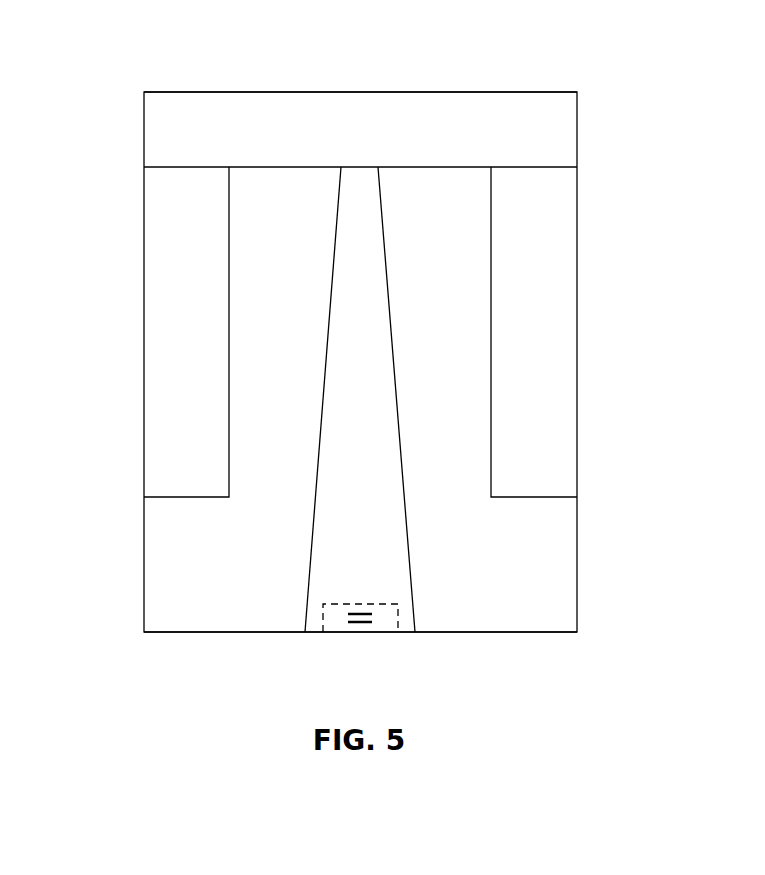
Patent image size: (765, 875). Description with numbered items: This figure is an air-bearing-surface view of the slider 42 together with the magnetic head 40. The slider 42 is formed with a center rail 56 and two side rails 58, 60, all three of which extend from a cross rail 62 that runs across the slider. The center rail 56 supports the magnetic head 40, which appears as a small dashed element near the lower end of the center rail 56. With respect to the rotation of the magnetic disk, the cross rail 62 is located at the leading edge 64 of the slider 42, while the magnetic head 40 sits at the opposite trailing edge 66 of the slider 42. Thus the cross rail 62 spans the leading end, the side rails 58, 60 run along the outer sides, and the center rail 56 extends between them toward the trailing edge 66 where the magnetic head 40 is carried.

The magnetic head 40 is at (340, 634).
The slider 42 is at (143, 582).
The center rail 56 is at (345, 277).
The side rail 58 is at (158, 245).
The side rail 60 is at (560, 245).
The cross rail 62 is at (281, 105).
The leading edge 64 is at (458, 92).
The trailing edge 66 is at (481, 633).